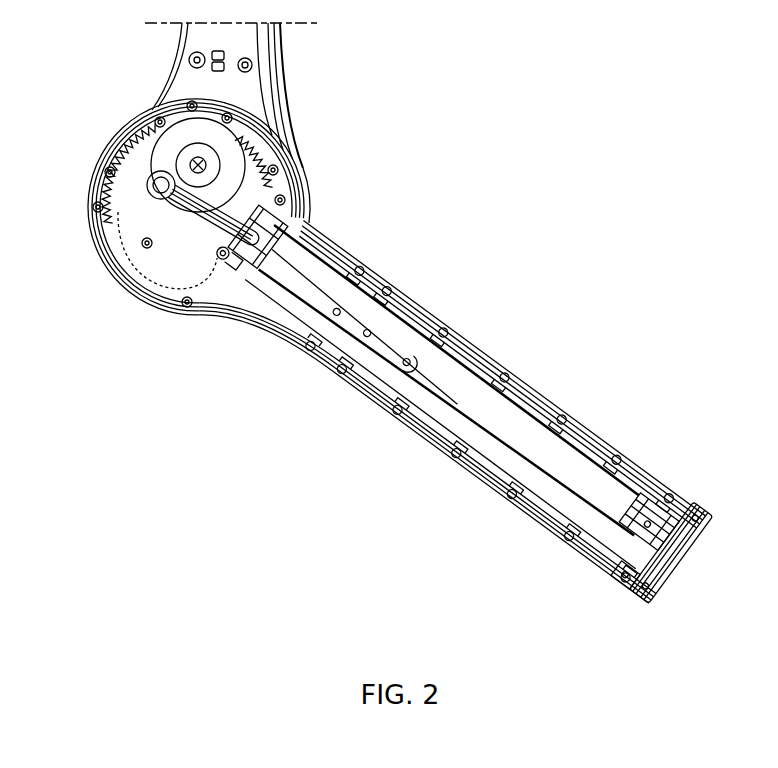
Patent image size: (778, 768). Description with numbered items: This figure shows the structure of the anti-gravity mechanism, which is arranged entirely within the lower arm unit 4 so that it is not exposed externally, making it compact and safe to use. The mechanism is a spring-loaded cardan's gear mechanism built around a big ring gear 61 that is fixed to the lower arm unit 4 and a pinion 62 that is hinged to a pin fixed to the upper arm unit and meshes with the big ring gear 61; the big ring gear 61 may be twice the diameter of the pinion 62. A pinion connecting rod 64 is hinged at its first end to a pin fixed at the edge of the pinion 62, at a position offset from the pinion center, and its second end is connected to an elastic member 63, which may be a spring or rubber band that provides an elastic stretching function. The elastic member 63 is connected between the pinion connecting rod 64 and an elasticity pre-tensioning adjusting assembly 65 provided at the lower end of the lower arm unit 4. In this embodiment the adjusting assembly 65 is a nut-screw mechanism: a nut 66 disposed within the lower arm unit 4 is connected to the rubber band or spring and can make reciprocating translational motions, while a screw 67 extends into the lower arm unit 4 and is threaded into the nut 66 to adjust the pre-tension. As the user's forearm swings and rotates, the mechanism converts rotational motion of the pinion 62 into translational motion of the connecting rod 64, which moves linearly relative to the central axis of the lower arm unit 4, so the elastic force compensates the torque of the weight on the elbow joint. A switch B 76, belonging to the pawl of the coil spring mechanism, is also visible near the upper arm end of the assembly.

The lower arm unit 4 is at (417, 318).
The big ring gear 61 is at (260, 147).
The pinion 62 is at (230, 190).
The elastic member 63 is at (288, 303).
The pinion connecting rod 64 is at (207, 230).
The elasticity pre-tensioning adjusting assembly 65 is at (640, 583).
The nut 66 is at (642, 532).
The screw 67 is at (622, 565).
The switch B 76 is at (247, 65).